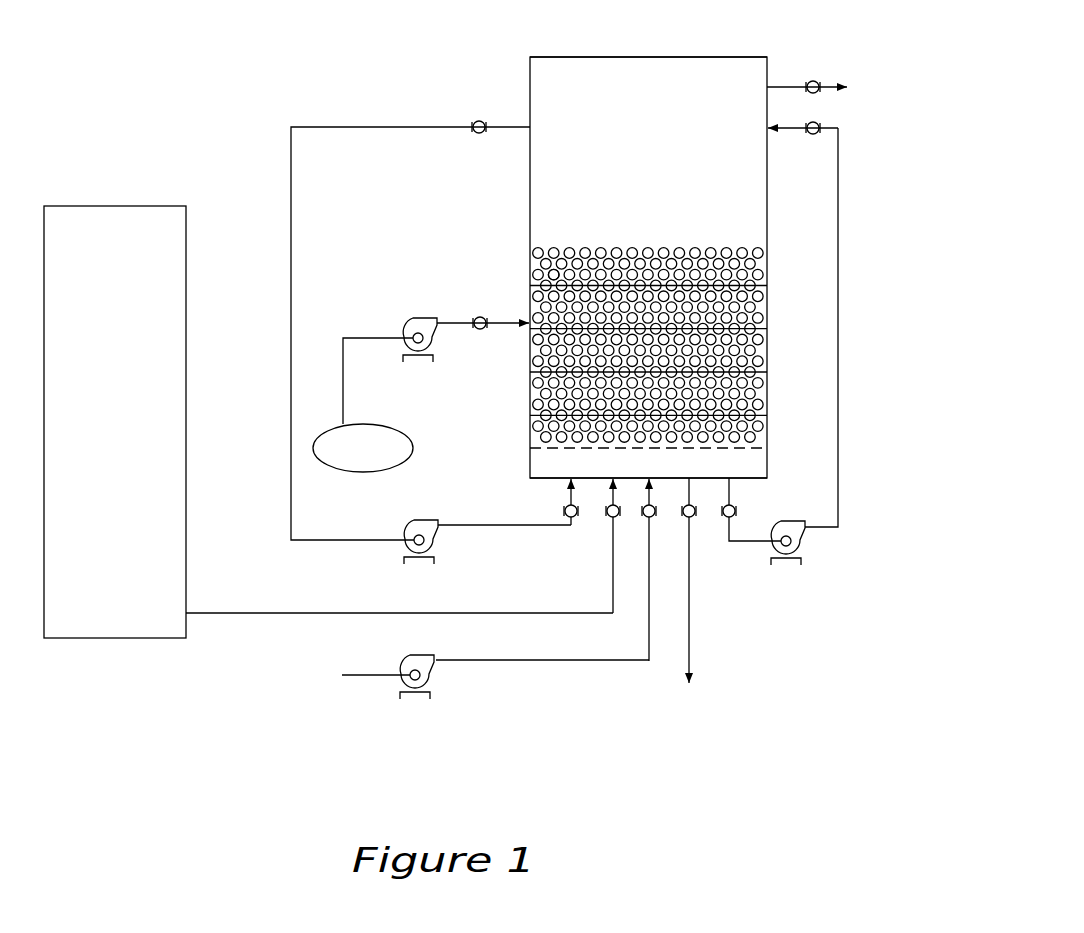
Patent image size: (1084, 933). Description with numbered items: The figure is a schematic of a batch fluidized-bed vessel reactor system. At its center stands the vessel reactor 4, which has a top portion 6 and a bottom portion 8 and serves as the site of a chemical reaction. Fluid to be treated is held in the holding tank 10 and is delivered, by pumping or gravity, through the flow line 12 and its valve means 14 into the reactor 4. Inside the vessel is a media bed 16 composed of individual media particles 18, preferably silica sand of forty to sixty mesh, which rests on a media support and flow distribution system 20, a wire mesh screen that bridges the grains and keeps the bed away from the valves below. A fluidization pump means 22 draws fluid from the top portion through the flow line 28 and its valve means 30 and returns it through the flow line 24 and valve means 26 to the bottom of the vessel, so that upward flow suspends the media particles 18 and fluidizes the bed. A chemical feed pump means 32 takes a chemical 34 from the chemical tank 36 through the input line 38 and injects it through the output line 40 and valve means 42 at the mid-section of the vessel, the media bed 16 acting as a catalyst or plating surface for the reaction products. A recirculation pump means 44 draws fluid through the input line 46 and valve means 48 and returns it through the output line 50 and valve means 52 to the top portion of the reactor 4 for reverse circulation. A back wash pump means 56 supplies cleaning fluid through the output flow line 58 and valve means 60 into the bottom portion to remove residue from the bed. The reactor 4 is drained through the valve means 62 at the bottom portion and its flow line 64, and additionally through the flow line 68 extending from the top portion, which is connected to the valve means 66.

The vessel reactor 4 is at (770, 190).
The top portion 6 is at (548, 88).
The bottom portion 8 is at (768, 479).
The holding tank 10 is at (166, 473).
The flow line 12 is at (471, 616).
The valve means 14 is at (616, 515).
The media bed 16 is at (630, 240).
The media particles 18 is at (549, 272).
The media support and flow distribution system 20 is at (708, 451).
The fluidization pump means 22 is at (411, 526).
The flow line 24 is at (466, 529).
The valve means 26 is at (573, 515).
The flow line 28 is at (293, 263).
The valve means 30 is at (472, 122).
The chemical feed pump means 32 is at (416, 321).
The chemical 34 is at (363, 448).
The chemical tank 36 is at (363, 448).
The input line 38 is at (367, 337).
The output line 40 is at (454, 328).
The valve means 42 is at (476, 317).
The recirculation pump means 44 is at (794, 553).
The input line 46 is at (748, 545).
The valve means 48 is at (736, 508).
The output line 50 is at (839, 371).
The valve means 52 is at (821, 126).
The back wash pump means 56 is at (421, 689).
The output flow line 58 is at (507, 664).
The valve means 60 is at (653, 515).
The valve means 62 is at (693, 515).
The flow line 64 is at (695, 626).
The valve means 66 is at (821, 82).
The flow line 68 is at (783, 86).